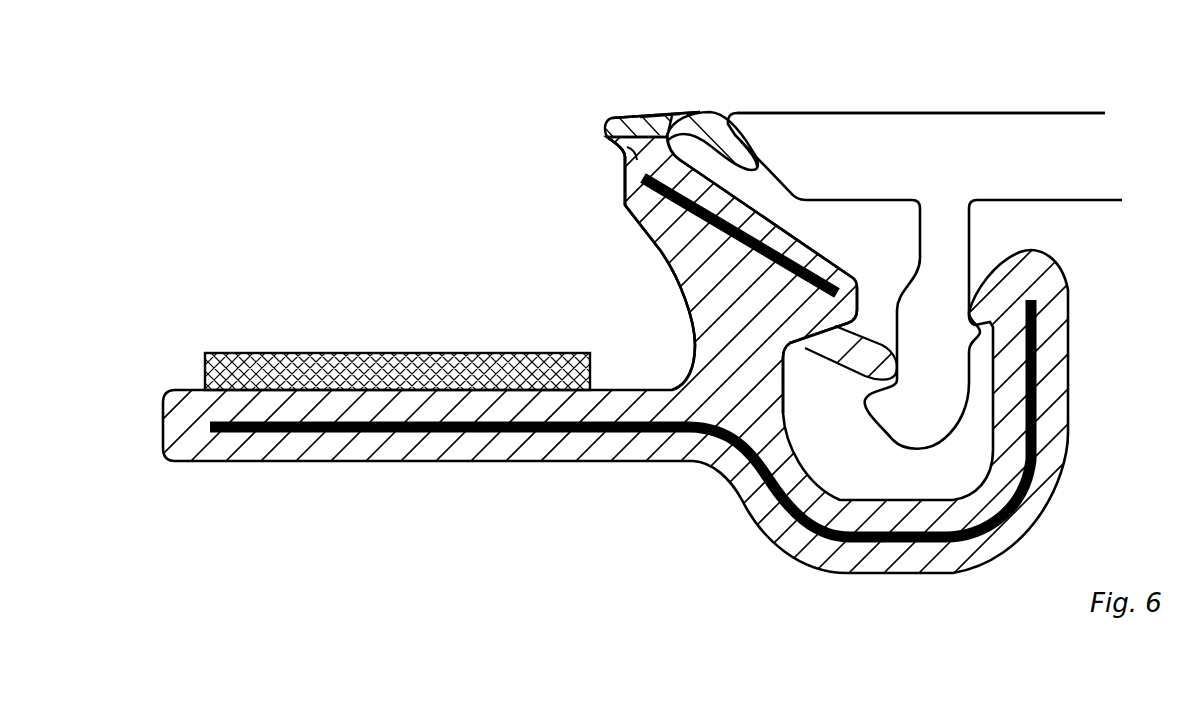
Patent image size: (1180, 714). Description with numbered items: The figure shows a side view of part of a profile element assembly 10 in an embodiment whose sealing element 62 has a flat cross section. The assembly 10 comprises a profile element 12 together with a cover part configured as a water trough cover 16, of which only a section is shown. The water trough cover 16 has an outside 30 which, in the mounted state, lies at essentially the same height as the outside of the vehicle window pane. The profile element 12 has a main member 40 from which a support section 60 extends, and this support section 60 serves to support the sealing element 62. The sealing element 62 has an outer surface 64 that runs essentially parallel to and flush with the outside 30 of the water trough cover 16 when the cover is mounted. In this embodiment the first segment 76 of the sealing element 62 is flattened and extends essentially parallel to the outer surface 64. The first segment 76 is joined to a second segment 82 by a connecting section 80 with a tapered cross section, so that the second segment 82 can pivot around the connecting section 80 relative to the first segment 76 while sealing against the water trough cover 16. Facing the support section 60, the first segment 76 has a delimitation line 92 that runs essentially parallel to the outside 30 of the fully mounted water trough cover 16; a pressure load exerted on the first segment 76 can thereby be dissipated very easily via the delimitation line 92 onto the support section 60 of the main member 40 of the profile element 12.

The profile element assembly 10 is at (474, 580).
The profile element 12 is at (698, 505).
The water trough cover 16 is at (1018, 88).
The outside 30 is at (833, 104).
The main member 40 is at (730, 357).
The support section 60 is at (633, 168).
The sealing element 62 is at (574, 108).
The outer surface 64 is at (652, 104).
The first segment 76 is at (637, 125).
The connecting section 80 is at (682, 123).
The second segment 82 is at (747, 157).
The delimitation line 92 is at (620, 152).